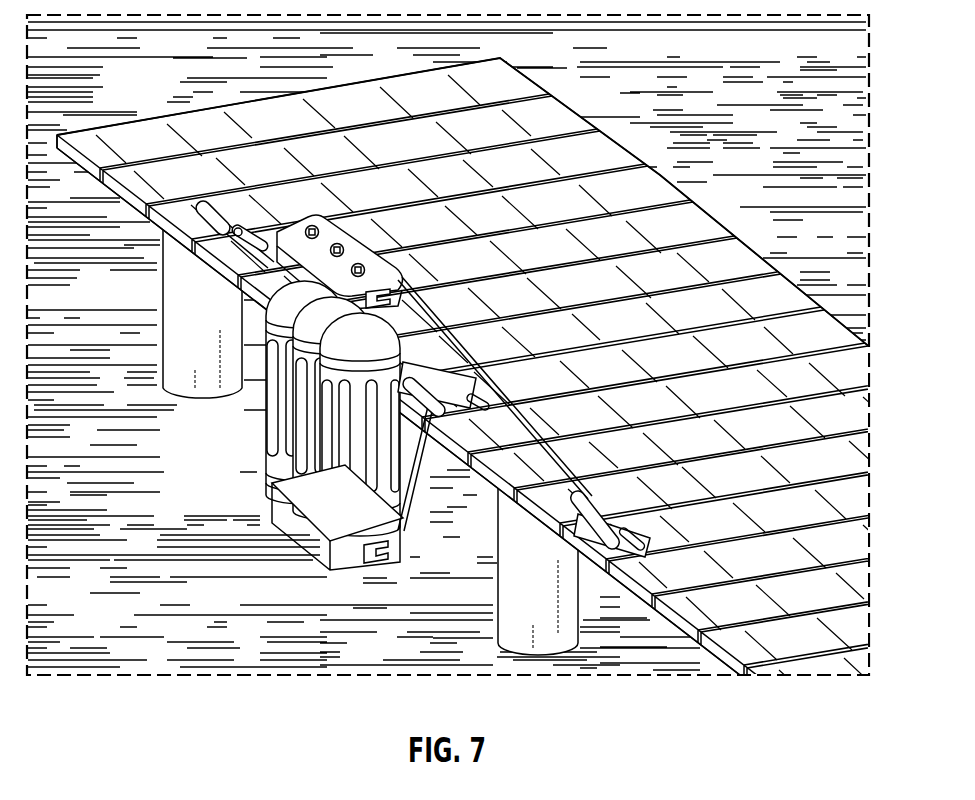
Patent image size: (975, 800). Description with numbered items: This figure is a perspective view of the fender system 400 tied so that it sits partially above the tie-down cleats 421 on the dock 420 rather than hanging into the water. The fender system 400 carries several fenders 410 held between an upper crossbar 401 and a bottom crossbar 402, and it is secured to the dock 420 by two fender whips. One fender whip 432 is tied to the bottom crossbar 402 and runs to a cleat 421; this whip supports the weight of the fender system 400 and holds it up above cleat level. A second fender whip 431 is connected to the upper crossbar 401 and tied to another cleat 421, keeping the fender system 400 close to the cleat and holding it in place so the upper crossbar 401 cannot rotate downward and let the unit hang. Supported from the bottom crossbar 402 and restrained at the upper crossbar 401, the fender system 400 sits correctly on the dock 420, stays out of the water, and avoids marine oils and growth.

The fender system 400 is at (281, 414).
The upper crossbar 401 is at (290, 266).
The bottom crossbar 402 is at (272, 497).
The fenders 410 is at (345, 455).
The dock 420 is at (194, 101).
The cleats 421 is at (228, 218).
The fender whip 431 is at (262, 237).
The fender whip 432 is at (418, 458).